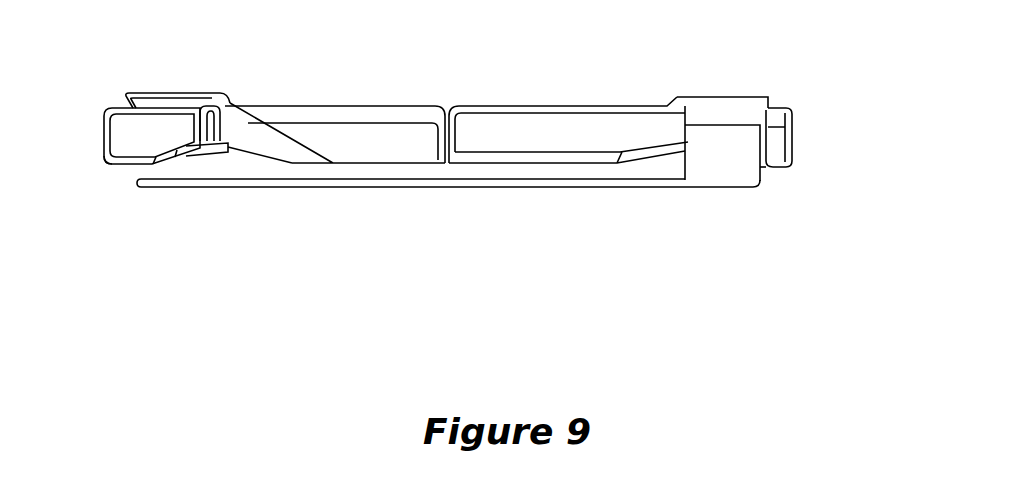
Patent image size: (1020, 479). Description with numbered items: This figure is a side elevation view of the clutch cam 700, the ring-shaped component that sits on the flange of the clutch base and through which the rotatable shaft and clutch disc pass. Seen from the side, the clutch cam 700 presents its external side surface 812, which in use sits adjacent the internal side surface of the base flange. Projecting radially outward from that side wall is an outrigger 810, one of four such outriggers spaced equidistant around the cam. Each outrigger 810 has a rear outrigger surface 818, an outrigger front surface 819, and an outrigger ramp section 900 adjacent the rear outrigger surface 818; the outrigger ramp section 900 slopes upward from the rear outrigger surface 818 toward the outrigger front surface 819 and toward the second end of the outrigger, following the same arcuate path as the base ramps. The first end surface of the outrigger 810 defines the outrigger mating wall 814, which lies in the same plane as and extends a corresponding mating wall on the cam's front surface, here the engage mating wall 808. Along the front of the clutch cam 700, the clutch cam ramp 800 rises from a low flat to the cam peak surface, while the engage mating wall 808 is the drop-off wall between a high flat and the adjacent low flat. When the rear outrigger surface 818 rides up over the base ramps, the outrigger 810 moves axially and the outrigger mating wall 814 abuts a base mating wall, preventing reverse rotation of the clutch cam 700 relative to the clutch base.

The clutch cam 700 is at (783, 75).
The clutch cam ramp 800 is at (260, 143).
The engage mating wall 808 is at (737, 118).
The outrigger 810 is at (120, 133).
The external side surface 812 is at (357, 173).
The outrigger mating wall 814 is at (775, 149).
The rear outrigger surface 818 is at (121, 167).
The outrigger front surface 819 is at (118, 106).
The outrigger ramp section 900 is at (183, 153).